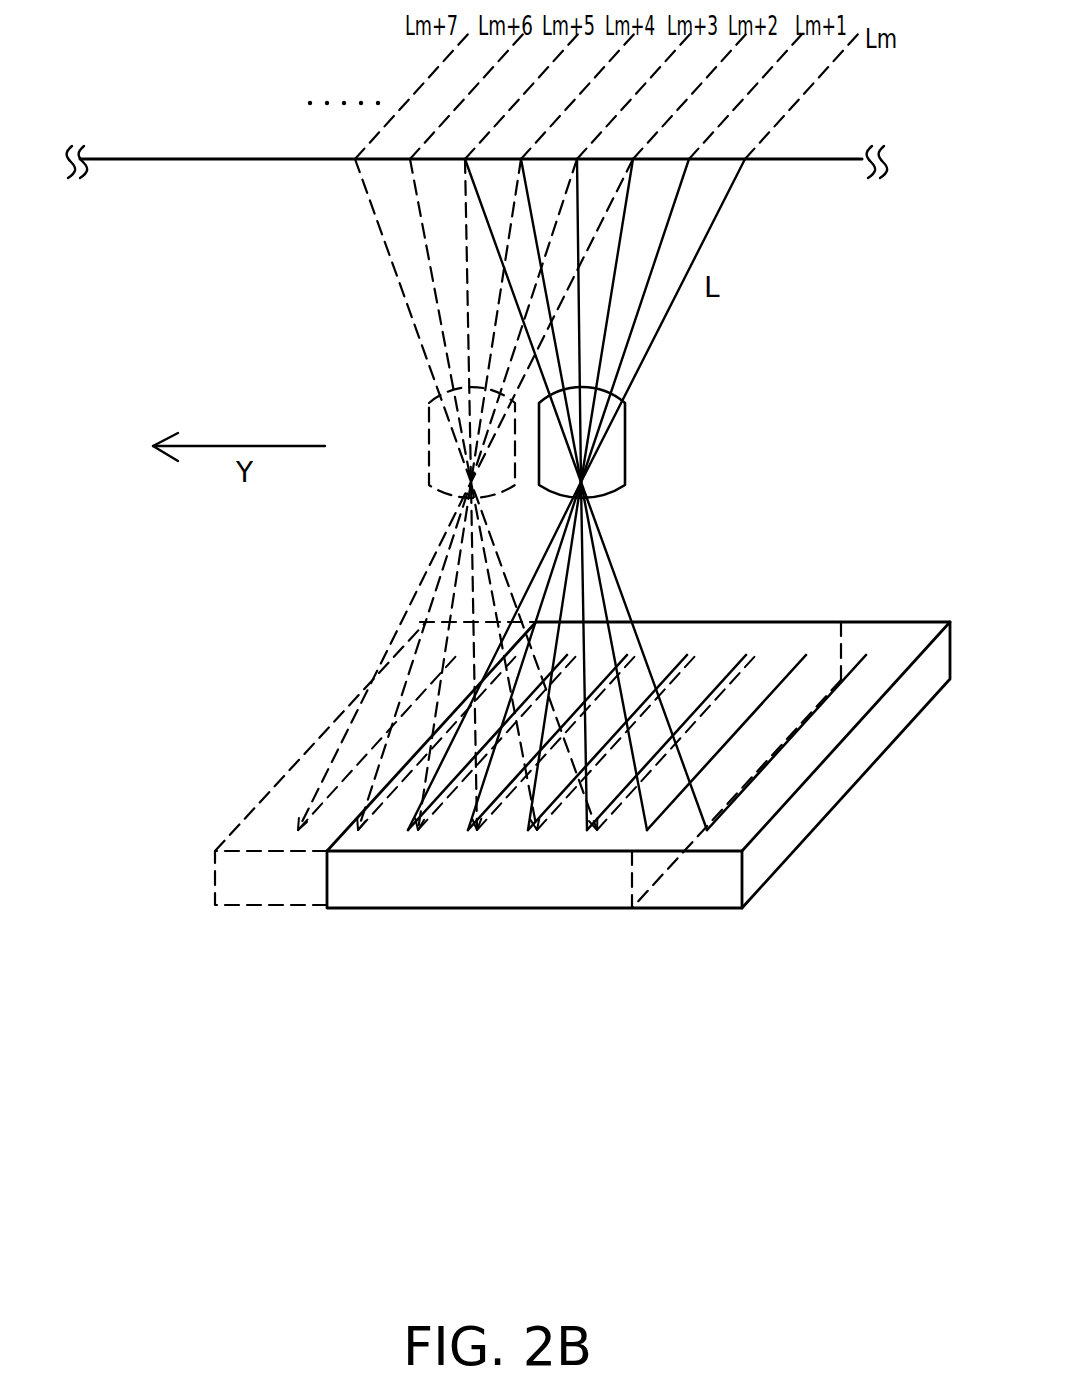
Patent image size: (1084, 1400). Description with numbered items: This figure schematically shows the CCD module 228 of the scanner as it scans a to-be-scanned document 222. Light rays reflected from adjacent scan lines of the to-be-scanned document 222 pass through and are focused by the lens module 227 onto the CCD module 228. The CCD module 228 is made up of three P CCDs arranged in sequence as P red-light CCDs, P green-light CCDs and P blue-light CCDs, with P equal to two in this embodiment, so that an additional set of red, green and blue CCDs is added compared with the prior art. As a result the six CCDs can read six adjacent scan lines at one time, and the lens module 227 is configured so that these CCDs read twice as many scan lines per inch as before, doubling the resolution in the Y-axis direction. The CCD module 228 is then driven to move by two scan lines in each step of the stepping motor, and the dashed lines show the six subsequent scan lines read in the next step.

The to-be-scanned document 222 is at (118, 158).
The lens module 227 is at (612, 440).
The CCD module 228 is at (807, 817).